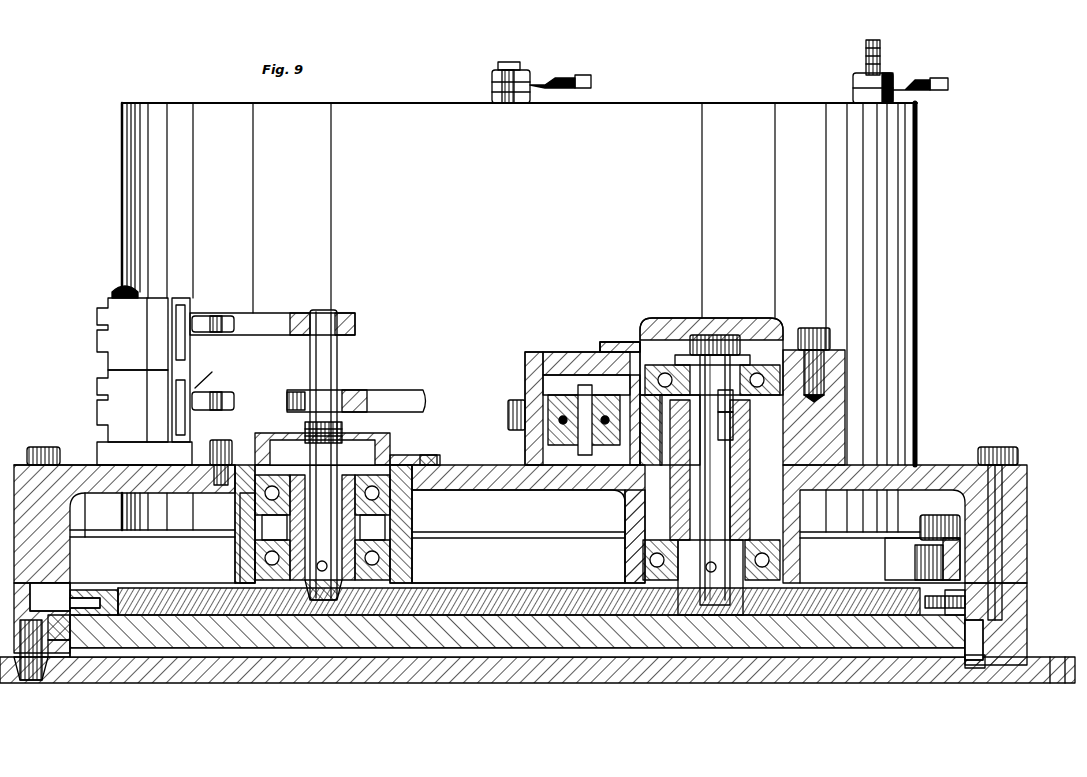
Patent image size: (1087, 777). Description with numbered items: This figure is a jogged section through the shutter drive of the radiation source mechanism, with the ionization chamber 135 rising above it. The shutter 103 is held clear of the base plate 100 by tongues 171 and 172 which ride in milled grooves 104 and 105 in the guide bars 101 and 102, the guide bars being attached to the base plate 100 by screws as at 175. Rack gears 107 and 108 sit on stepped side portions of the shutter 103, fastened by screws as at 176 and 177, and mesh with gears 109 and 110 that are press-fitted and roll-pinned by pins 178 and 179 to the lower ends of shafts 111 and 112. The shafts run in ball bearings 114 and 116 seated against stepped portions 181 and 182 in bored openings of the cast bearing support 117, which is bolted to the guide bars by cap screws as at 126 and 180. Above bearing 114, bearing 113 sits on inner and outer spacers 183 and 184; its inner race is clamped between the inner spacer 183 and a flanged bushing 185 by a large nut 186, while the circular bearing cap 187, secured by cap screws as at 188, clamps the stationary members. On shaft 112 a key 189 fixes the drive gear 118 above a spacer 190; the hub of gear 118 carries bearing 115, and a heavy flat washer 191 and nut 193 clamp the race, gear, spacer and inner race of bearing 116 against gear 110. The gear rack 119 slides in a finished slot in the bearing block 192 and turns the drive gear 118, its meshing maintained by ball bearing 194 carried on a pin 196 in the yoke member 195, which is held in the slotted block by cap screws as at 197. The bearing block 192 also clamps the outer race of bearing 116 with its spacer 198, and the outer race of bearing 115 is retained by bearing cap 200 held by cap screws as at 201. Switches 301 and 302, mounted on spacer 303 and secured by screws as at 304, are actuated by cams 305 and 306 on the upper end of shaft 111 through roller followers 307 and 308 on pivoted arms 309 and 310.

The base plate 100 is at (495, 678).
The shutter guide bar 101 is at (28, 583).
The shutter guide bar 102 is at (1020, 632).
The shutter 103 is at (598, 640).
The milled groove 104 is at (62, 612).
The milled groove 105 is at (985, 638).
The rack gear 107 is at (108, 595).
The rack gear 108 is at (930, 610).
The gear 109 is at (460, 598).
The gear 110 is at (538, 600).
The shaft 111 is at (312, 600).
The shaft 112 is at (708, 605).
The ball bearing 113 is at (385, 495).
The ball bearing 114 is at (385, 560).
The ball bearing 115 is at (658, 340).
The ball bearing 116 is at (640, 558).
The bearing support 117 is at (60, 533).
The drive gear 118 is at (760, 410).
The gear rack 119 is at (635, 362).
The capscrew 126 is at (42, 448).
The ionization chamber 135 is at (913, 228).
The tongue 171 is at (62, 657).
The tongue 172 is at (975, 668).
The screw 175 is at (30, 682).
The screw 176 is at (72, 615).
The screw 177 is at (948, 608).
The roll pin 178 is at (322, 571).
The roll pin 179 is at (711, 572).
The cap screw 180 is at (998, 450).
The annular reduced diameter stepped portion 181 is at (255, 580).
The annular reduced diameter stepped portion 182 is at (800, 580).
The inner spacer 183 is at (357, 530).
The outer spacer 184 is at (240, 538).
The flanged bushing 185 is at (292, 470).
The large nut 186 is at (385, 460).
The bearing cap 187 is at (436, 458).
The cap screw 188 is at (230, 450).
The key 189 is at (730, 424).
The spacer 190 is at (800, 505).
The heavy flat washer 191 is at (772, 350).
The bearing block 192 is at (840, 380).
The nut 193 is at (730, 340).
The ball bearing 194 is at (525, 408).
The yoke member 195 is at (525, 356).
The pin 196 is at (585, 392).
The cap screw 197 is at (508, 414).
The spacer 198 is at (642, 512).
The bearing cap 200 is at (715, 322).
The cap screw 201 is at (828, 335).
The switch 301 is at (100, 400).
The switch 302 is at (105, 336).
The spacer 303 is at (110, 453).
The screw 304 is at (118, 292).
The cam 305 is at (400, 398).
The cam 306 is at (280, 312).
The roller follower 307 is at (235, 398).
The roller follower 308 is at (230, 316).
The pivoted arm 309 is at (212, 373).
The pivoted arm 310 is at (200, 300).